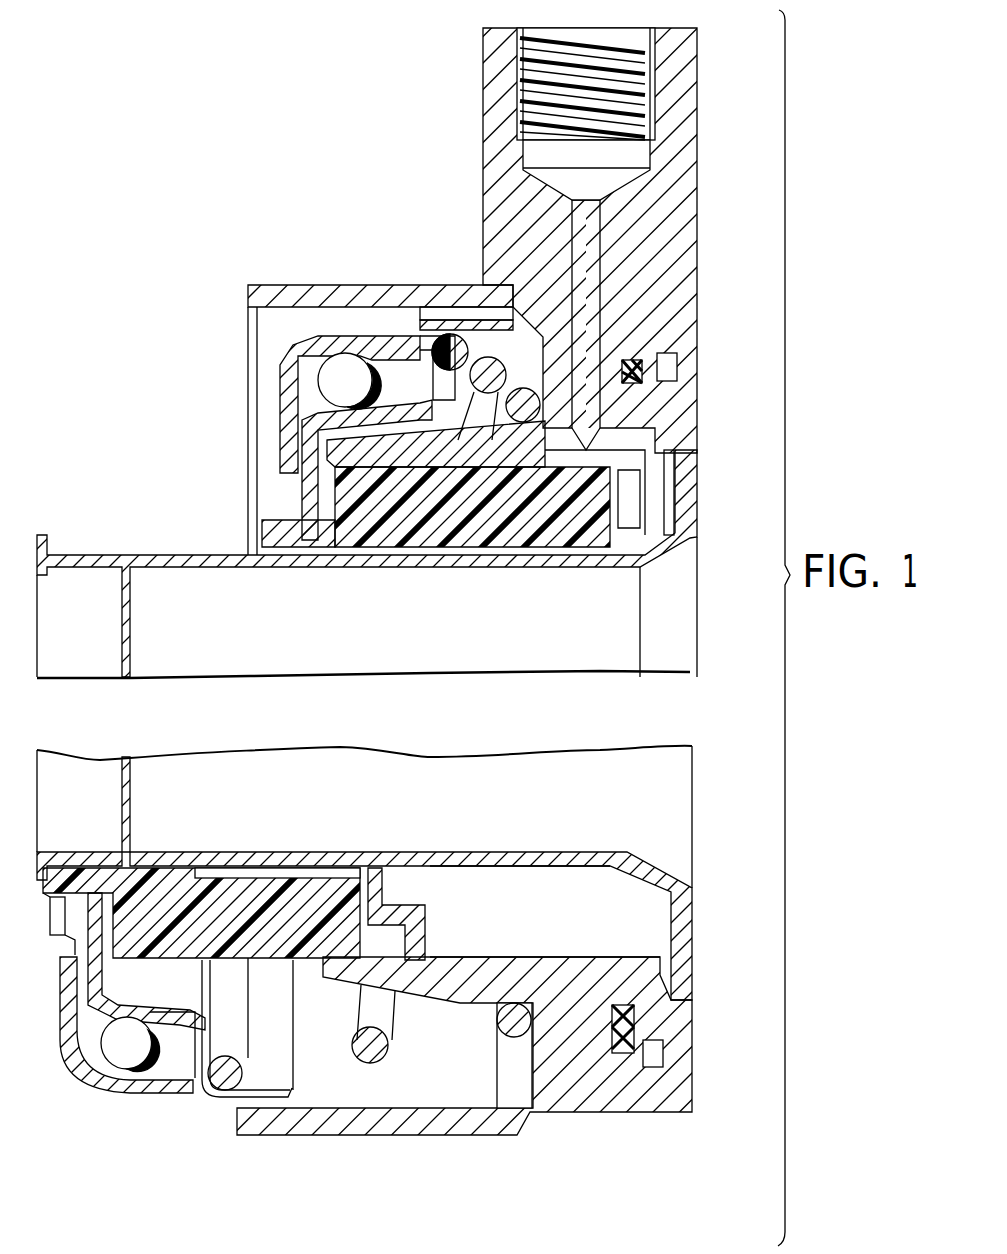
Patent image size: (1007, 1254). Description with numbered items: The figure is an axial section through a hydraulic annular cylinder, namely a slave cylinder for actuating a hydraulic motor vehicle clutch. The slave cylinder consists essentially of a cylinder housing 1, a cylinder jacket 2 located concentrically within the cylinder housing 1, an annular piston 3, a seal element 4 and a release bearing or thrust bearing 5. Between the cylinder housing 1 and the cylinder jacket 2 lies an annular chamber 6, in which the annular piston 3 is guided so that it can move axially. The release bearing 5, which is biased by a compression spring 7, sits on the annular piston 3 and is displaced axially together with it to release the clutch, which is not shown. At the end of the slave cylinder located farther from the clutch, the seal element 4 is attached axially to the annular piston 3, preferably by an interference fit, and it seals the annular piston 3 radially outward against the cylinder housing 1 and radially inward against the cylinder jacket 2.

The cylinder housing 1 is at (683, 205).
The cylinder jacket 2 is at (690, 492).
The annular piston 3 is at (540, 520).
The seal element 4 is at (448, 909).
The release bearing 5 is at (252, 388).
The annular chamber 6 is at (625, 922).
The compression spring 7 is at (365, 1053).